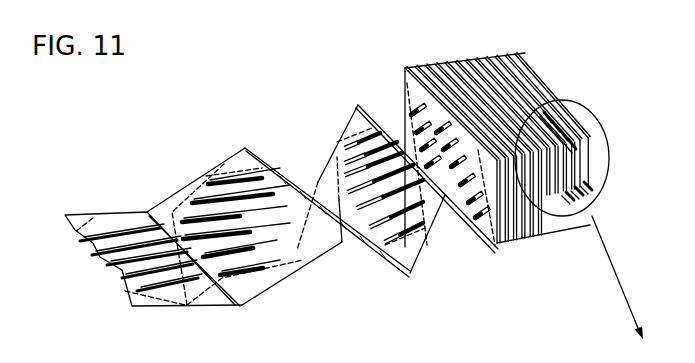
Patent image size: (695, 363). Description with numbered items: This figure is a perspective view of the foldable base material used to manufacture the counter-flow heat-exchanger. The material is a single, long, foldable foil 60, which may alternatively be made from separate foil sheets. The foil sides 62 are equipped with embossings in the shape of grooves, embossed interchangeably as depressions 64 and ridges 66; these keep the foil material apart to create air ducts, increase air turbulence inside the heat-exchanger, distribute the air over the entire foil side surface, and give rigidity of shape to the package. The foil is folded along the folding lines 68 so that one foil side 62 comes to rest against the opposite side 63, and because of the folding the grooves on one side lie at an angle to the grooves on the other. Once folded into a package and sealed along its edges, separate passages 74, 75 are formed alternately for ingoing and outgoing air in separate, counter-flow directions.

The foldable foil 60 is at (242, 143).
The foil side 62 is at (191, 209).
The opposite foil side 63 is at (73, 218).
The depression 64 is at (243, 270).
The ridge 66 is at (250, 250).
The folding line 68 is at (355, 108).
The passage 74 is at (558, 158).
The passage 75 is at (562, 197).